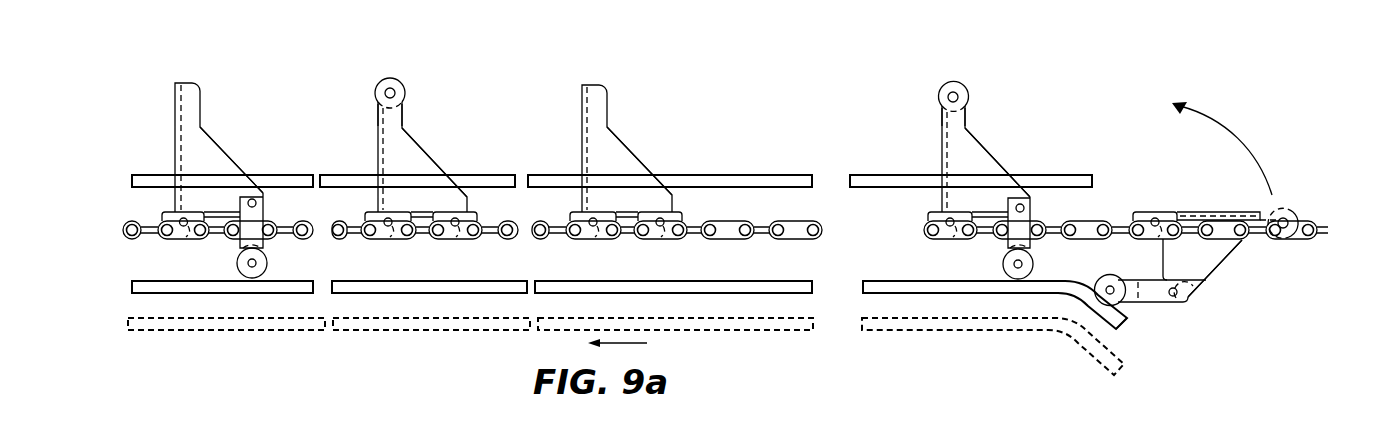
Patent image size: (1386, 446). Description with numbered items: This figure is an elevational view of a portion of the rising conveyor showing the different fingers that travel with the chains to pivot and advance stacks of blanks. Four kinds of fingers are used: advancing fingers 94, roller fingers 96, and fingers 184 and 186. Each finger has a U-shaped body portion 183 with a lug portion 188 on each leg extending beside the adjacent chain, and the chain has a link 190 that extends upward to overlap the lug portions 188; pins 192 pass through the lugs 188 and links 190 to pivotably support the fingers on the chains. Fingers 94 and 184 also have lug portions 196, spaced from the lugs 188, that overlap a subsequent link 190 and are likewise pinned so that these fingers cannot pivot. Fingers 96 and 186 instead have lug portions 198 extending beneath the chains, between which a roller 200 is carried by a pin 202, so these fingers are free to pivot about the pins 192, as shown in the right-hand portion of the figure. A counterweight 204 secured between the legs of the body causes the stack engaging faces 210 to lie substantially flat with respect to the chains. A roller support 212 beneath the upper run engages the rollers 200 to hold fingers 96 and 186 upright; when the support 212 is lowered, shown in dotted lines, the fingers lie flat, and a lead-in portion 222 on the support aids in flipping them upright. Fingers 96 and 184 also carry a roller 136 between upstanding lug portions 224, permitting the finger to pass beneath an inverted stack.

The advancing finger 94 is at (620, 128).
The roller finger 96 is at (1002, 143).
The roller 136 is at (398, 82).
The U-shaped body portion 183 is at (227, 206).
The finger 184 is at (430, 149).
The finger 186 is at (218, 139).
The lug portion 188 is at (187, 236).
The link 190 is at (165, 212).
The pin 192 is at (182, 227).
The lug portion 196 is at (460, 239).
The lug portion 198 is at (251, 279).
The roller 200 is at (259, 278).
The pin 202 is at (258, 261).
The counterweight 204 is at (1190, 293).
The stack engaging face 210 is at (175, 130).
The roller support 212 is at (693, 292).
The lead-in portion 222 is at (1122, 323).
The upstanding lug portion 224 is at (403, 115).